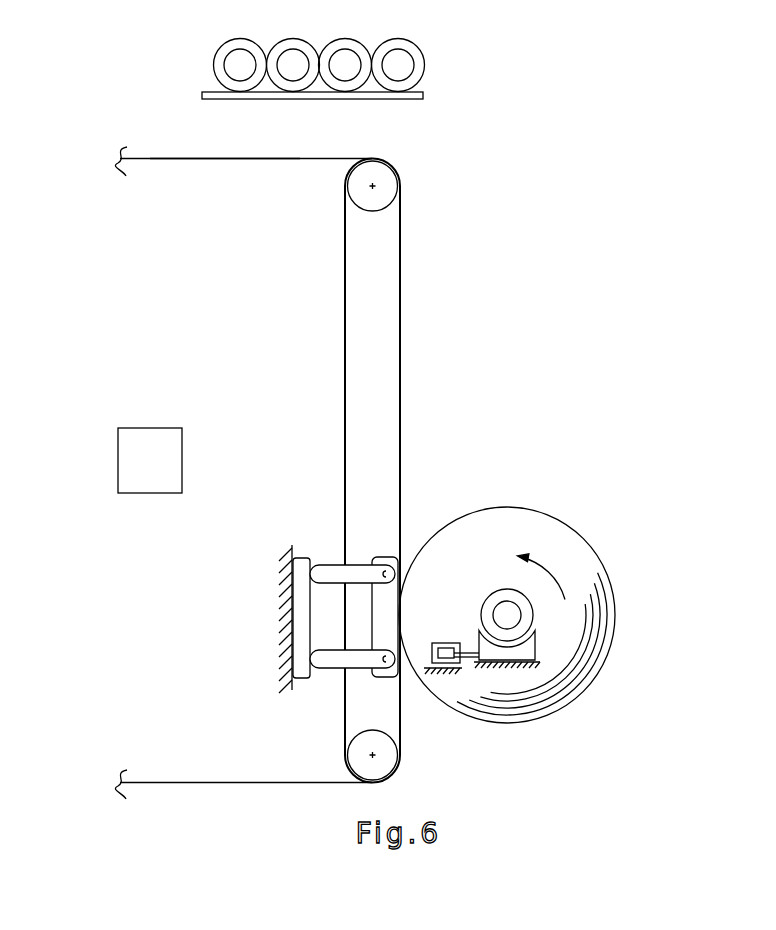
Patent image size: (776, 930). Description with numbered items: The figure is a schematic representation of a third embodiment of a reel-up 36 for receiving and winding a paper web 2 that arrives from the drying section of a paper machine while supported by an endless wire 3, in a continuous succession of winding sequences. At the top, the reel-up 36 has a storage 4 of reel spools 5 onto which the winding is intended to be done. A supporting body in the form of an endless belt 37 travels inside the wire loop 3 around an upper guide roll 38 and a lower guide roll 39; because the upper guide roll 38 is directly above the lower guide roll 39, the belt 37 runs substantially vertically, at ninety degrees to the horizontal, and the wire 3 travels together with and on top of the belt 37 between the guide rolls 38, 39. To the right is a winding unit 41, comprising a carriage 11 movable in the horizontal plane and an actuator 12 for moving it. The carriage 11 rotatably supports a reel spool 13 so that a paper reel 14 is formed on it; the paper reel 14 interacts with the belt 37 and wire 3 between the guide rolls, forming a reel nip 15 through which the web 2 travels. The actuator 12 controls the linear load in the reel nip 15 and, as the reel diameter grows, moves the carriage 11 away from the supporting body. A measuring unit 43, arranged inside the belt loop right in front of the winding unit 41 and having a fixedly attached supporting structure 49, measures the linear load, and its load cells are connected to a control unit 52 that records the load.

The paper web 2 is at (291, 157).
The endless wire 3 is at (206, 161).
The storage 4 is at (445, 57).
The reel spools 5 is at (213, 62).
The carriage 11 is at (536, 647).
The actuator 12 is at (441, 645).
The reel spool 13 is at (500, 596).
The paper reel 14 is at (579, 531).
The reel nip 15 is at (405, 556).
The reel-up 36 is at (612, 237).
The endless belt 37 is at (345, 426).
The upper guide roll 38 is at (373, 213).
The lower guide roll 39 is at (371, 736).
The winding unit 41 is at (668, 614).
The measuring unit 43 is at (371, 522).
The supporting structure 49 is at (328, 568).
The control unit 52 is at (155, 494).